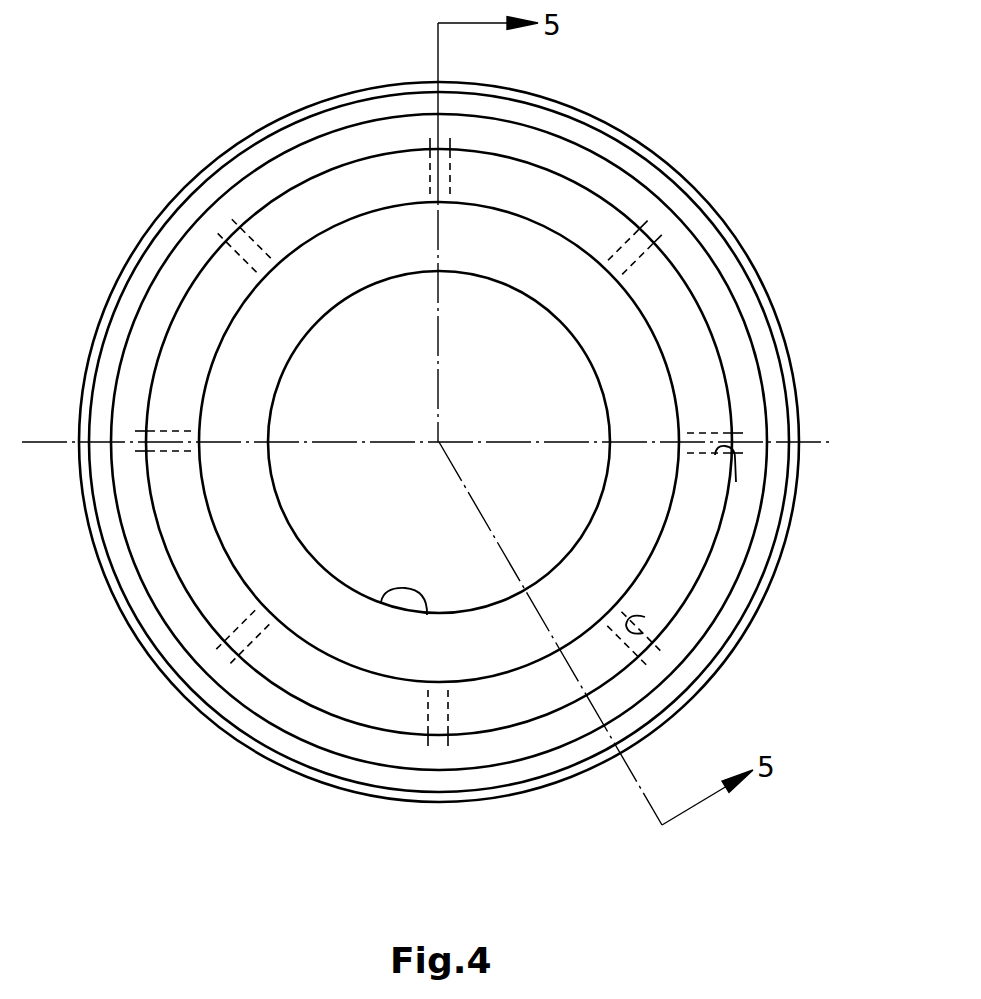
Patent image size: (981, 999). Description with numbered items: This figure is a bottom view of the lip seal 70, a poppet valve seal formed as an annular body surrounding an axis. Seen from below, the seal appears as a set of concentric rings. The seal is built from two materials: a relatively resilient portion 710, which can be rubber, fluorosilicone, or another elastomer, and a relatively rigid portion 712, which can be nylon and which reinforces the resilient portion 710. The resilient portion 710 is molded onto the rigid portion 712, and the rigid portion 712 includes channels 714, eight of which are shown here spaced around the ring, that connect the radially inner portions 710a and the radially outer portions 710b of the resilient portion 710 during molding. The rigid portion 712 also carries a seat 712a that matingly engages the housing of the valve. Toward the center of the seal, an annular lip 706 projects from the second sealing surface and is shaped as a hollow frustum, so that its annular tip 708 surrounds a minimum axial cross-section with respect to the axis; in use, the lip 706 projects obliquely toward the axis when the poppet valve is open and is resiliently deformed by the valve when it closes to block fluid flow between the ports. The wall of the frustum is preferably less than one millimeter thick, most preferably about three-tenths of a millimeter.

The lip seal 70 is at (649, 111).
The relatively resilient portion 710 is at (129, 66).
The radially inner portions 710a is at (320, 263).
The radially outer portions 710b is at (227, 172).
The annular lip 706 is at (625, 358).
The relatively rigid portion 712 is at (213, 595).
The seat 712a is at (492, 731).
The channel 714 is at (647, 627).
The annular tip 708 is at (427, 615).